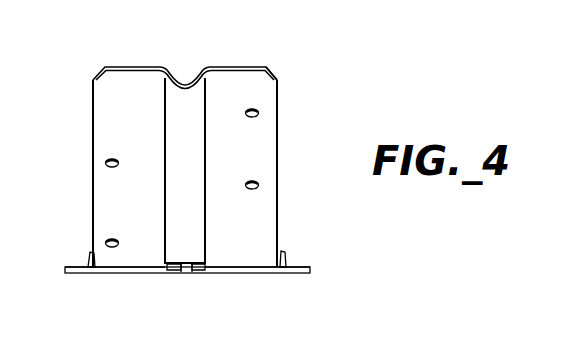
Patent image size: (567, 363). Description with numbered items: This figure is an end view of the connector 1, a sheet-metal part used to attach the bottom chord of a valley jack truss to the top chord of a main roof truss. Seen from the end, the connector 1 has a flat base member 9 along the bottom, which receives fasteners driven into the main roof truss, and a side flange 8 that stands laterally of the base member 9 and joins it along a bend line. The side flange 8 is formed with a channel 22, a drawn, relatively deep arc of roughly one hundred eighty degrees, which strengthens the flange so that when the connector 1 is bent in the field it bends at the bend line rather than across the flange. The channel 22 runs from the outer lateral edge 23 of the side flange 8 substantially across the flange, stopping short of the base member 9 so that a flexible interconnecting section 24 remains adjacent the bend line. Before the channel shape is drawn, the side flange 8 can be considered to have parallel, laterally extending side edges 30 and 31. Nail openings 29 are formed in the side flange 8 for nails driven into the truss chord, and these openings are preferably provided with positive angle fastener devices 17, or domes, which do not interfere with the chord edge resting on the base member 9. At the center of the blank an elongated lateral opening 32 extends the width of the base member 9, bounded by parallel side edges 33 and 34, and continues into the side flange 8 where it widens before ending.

The connector 1 is at (93, 67).
The second side flange 8 is at (278, 80).
The base member 9 is at (300, 274).
The positive angle fastener device 17 is at (88, 258).
The channel 22 is at (207, 224).
The outer lateral edge 23 is at (232, 66).
The flexible interconnecting section 24 is at (150, 264).
The nail opening 29 is at (105, 162).
The side edge 30 is at (277, 136).
The side edge 31 is at (93, 110).
The elongated lateral opening 32 is at (186, 274).
The side edge of elongated lateral opening 33 is at (196, 272).
The side edge of elongated lateral opening 34 is at (176, 272).